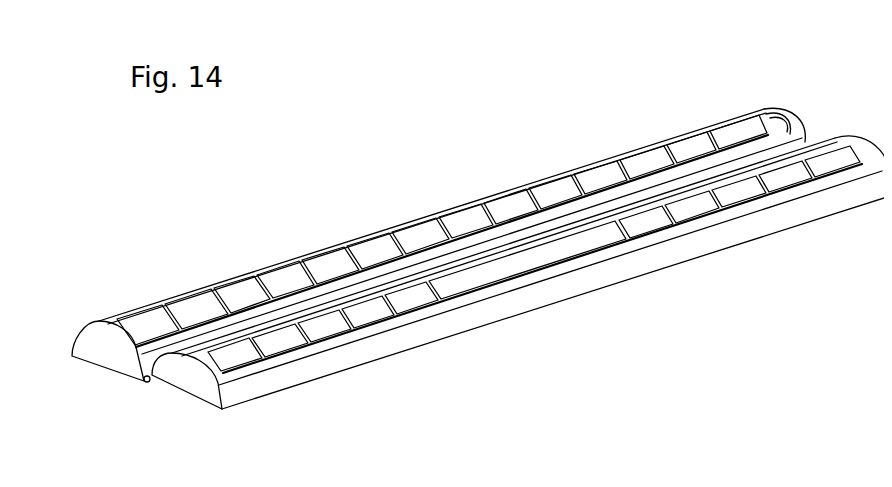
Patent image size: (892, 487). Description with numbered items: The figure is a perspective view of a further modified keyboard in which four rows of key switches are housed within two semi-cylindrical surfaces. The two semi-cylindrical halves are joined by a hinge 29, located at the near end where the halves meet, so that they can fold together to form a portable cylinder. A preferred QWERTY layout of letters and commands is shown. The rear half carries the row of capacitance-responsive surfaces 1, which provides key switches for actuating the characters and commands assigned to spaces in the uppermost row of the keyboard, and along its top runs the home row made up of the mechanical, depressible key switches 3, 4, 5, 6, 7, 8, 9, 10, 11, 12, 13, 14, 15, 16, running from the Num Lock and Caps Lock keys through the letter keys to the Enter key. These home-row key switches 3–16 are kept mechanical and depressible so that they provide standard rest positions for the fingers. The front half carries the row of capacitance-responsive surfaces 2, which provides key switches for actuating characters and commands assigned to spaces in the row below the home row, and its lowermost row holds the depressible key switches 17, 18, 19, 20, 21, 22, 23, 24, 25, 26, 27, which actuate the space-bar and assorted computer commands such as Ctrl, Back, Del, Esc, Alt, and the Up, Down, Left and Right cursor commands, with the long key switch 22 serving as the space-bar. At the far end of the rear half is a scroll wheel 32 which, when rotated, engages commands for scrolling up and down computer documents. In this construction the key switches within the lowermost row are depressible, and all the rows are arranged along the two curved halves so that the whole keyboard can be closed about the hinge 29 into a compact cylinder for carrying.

The row of capacitance-responsive surfaces 1 is at (85, 325).
The row of capacitance-responsive surfaces 2 is at (168, 354).
The mechanical depressible key switch 3 is at (140, 312).
The mechanical depressible key switch 4 is at (183, 300).
The mechanical depressible key switch 5 is at (233, 285).
The mechanical depressible key switch 6 is at (277, 272).
The mechanical depressible key switch 7 is at (323, 258).
The mechanical depressible key switch 8 is at (368, 245).
The mechanical depressible key switch 9 is at (413, 227).
The mechanical depressible key switch 10 is at (460, 208).
The mechanical depressible key switch 11 is at (508, 193).
The mechanical depressible key switch 12 is at (550, 182).
The mechanical depressible key switch 13 is at (597, 168).
The mechanical depressible key switch 14 is at (642, 155).
The mechanical depressible key switch 15 is at (692, 142).
The mechanical depressible key switch 16 is at (737, 125).
The depressible key switch 17 is at (233, 360).
The depressible key switch 18 is at (283, 350).
The depressible key switch 19 is at (330, 330).
The depressible key switch 20 is at (373, 317).
The depressible key switch 21 is at (420, 303).
The depressible key switch 22 is at (537, 263).
The depressible key switch 23 is at (645, 225).
The depressible key switch 24 is at (690, 212).
The depressible key switch 25 is at (738, 198).
The depressible key switch 26 is at (785, 185).
The depressible key switch 27 is at (830, 165).
The hinge 29 is at (143, 379).
The scroll wheel 32 is at (781, 114).